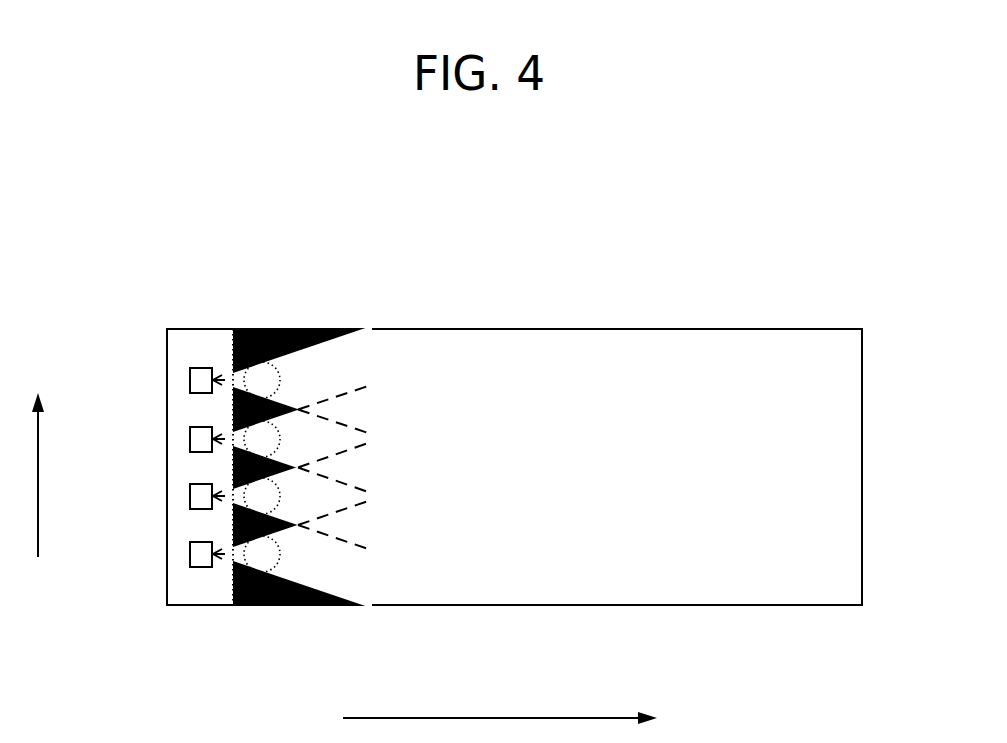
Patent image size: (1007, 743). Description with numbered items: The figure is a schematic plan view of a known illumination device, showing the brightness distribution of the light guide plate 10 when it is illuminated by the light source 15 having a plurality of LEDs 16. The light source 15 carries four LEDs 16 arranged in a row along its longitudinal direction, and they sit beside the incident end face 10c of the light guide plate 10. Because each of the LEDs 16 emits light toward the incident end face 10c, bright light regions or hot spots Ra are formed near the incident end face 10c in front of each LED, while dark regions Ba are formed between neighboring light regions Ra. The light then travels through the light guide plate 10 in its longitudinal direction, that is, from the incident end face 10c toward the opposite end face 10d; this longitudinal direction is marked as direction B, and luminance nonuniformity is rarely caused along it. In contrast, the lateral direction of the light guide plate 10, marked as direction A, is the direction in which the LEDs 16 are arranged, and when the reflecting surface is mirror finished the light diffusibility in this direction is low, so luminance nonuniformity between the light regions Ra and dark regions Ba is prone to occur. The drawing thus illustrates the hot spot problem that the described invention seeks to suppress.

The light guide plate 10 is at (603, 353).
The incident end face 10c is at (233, 583).
The opposite end face 10d is at (862, 452).
The light source 15 is at (173, 330).
The LEDs 16 is at (190, 368).
The light regions Ra is at (283, 330).
The dark regions Ba is at (277, 605).
The direction A is at (37, 449).
The direction B is at (522, 718).